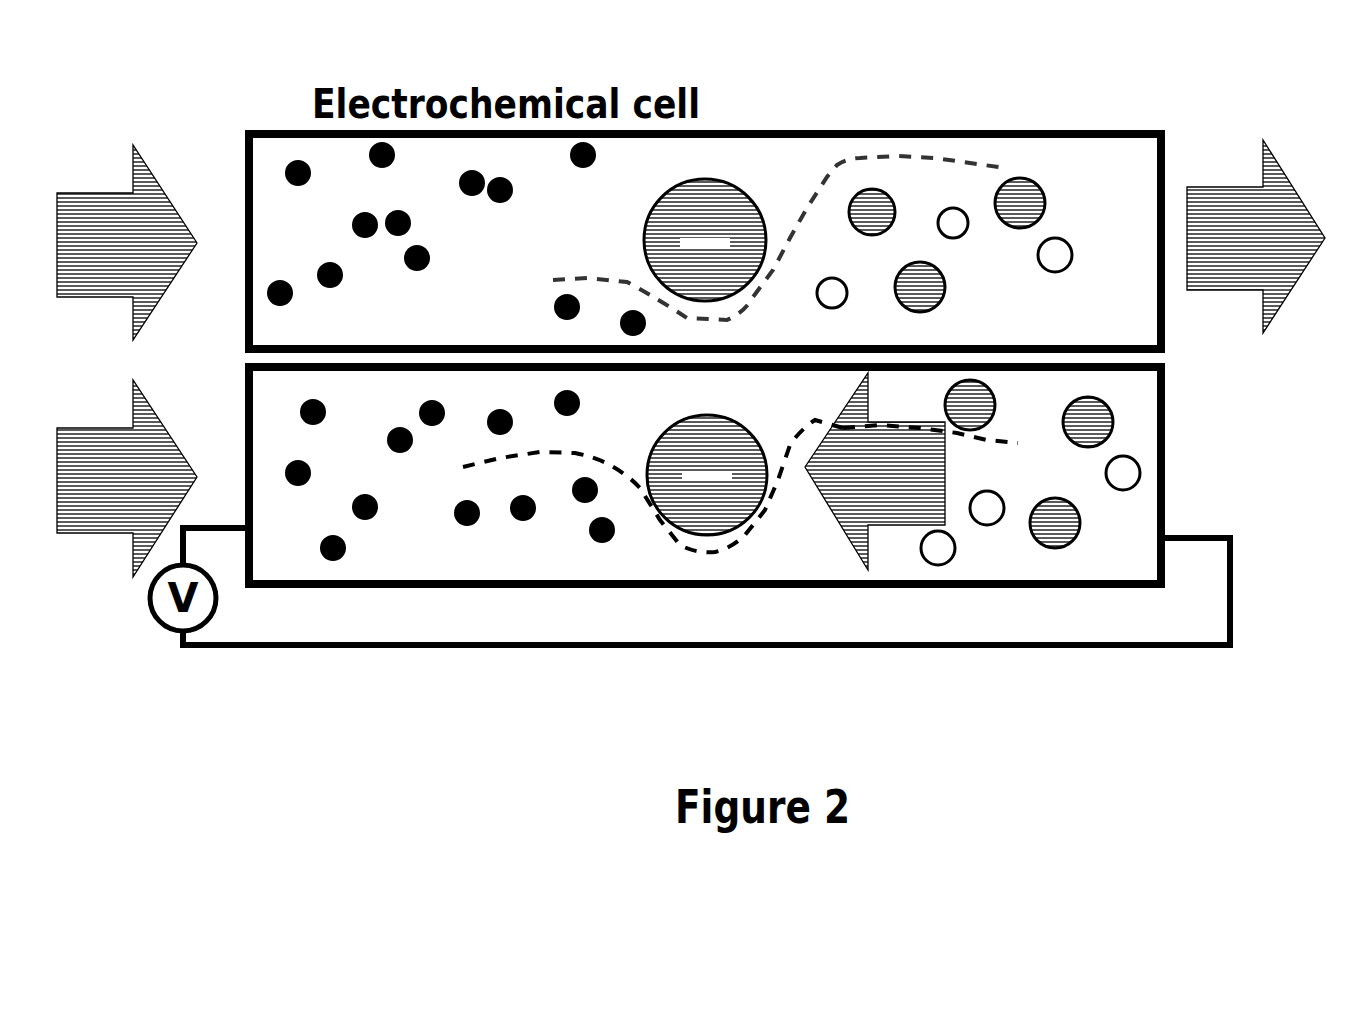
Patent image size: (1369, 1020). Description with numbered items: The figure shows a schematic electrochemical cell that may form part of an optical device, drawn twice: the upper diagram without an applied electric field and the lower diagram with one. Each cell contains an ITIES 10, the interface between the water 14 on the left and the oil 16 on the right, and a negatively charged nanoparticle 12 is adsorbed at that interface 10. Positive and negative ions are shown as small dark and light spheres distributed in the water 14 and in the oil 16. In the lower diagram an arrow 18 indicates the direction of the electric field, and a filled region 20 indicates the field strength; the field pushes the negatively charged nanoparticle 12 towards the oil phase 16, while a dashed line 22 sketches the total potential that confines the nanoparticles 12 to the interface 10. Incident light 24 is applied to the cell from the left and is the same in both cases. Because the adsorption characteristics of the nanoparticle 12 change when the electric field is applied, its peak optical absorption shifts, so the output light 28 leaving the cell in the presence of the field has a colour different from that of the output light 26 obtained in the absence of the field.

The ITIES 10 is at (712, 158).
The negatively charged nanoparticle 12 is at (740, 213).
The water 14 is at (270, 180).
The oil 16 is at (1140, 180).
The arrow 18 is at (938, 487).
The filled region 20 is at (773, 567).
The dashed line 22 is at (993, 440).
The incident light 24 is at (93, 198).
The output light 26 is at (1280, 183).
The output light 28 is at (1282, 422).